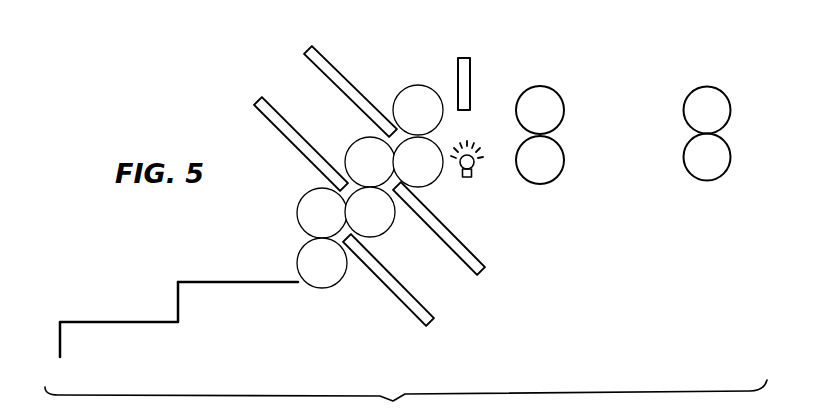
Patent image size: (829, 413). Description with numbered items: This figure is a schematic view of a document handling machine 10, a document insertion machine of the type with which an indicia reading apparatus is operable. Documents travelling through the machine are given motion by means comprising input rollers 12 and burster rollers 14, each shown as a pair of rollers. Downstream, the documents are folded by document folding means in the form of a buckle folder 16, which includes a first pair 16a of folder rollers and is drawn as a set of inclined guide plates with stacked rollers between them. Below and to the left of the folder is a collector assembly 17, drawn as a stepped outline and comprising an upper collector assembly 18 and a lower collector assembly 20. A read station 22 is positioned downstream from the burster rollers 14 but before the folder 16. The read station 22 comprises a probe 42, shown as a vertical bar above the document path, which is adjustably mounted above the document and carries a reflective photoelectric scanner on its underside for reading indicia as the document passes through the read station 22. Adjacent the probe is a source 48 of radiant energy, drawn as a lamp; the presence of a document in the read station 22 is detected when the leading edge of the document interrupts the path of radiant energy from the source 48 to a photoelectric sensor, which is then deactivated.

The document handling machine 10 is at (268, 202).
The input rollers 12 is at (718, 89).
The burster rollers 14 is at (556, 92).
The buckle folder 16 is at (273, 76).
The first pair of folder rollers 16a is at (407, 87).
The collector assembly 17 is at (218, 335).
The upper collector assembly 18 is at (218, 275).
The lower collector assembly 20 is at (115, 310).
The read station 22 is at (468, 44).
The probe 42 is at (471, 72).
The source 48 is at (472, 169).